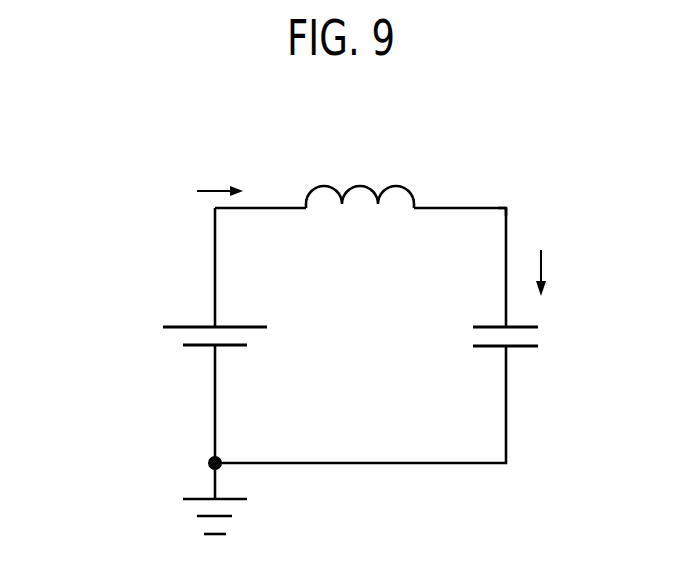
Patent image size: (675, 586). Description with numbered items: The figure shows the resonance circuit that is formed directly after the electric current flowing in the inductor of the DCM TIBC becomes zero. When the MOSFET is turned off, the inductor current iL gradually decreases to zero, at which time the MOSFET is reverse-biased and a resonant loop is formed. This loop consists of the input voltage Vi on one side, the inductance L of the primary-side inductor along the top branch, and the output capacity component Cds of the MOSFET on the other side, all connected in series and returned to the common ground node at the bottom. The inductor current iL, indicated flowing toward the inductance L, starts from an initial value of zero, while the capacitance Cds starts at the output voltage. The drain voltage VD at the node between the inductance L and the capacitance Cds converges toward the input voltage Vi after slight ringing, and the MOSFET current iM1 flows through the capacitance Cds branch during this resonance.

The inductance of the inductor L is at (360, 215).
The input voltage Vi is at (200, 331).
The output capacity component of the MOSFET Cds is at (524, 338).
The drain voltage VD is at (499, 192).
The inductor current iL is at (220, 178).
The MOSFET current iM1 is at (539, 258).